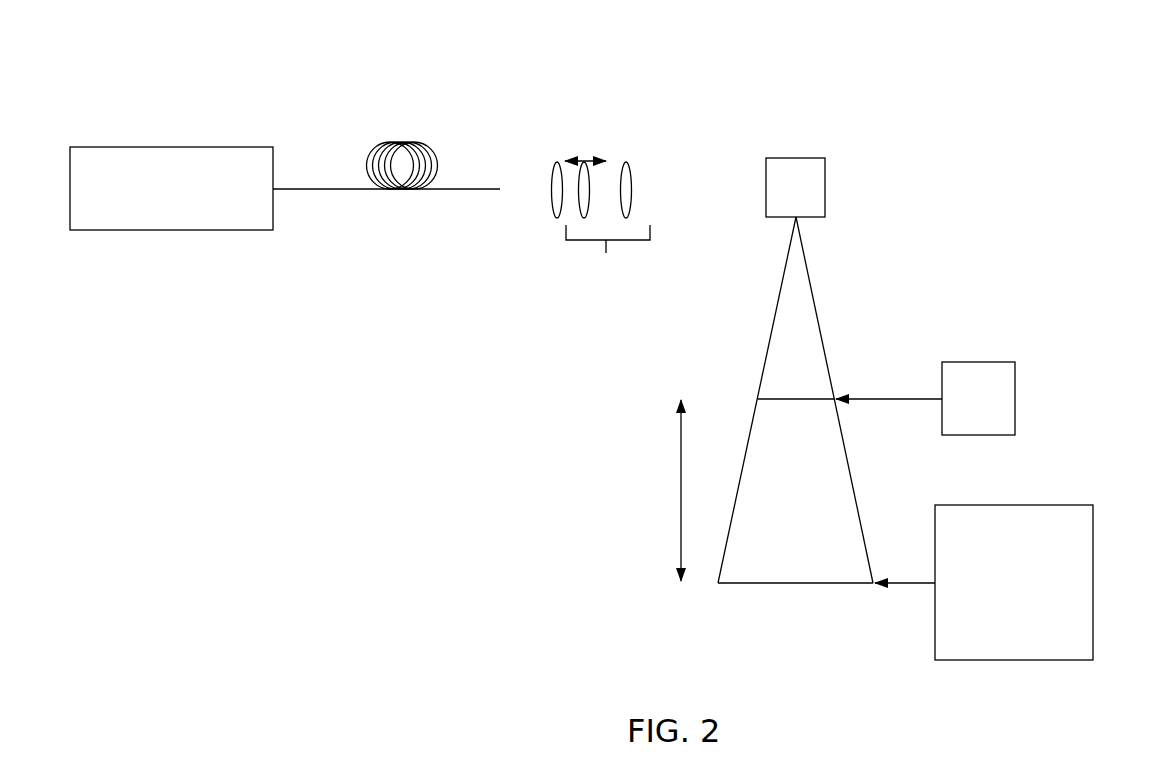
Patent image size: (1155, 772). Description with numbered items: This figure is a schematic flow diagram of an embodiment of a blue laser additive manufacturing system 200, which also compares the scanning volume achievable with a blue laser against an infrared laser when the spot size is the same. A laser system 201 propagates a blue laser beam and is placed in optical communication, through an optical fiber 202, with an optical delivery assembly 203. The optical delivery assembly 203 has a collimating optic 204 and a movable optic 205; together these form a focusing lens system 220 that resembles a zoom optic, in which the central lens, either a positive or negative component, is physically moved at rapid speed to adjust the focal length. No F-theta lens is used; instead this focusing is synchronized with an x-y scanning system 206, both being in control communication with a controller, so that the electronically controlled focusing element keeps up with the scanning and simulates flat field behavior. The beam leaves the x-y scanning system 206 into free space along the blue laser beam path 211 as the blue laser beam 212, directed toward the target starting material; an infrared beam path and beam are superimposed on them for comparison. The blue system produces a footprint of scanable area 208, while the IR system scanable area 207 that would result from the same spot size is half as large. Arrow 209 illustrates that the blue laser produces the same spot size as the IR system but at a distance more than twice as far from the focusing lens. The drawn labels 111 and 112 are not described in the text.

The additive manufacturing system 200 is at (294, 374).
The laser system 201 is at (178, 147).
The optical fiber 202 is at (400, 141).
The optical delivery assembly 203 is at (586, 92).
The collimating optic 204 is at (558, 163).
The movable optic 205 is at (590, 158).
The focusing lens system 220 is at (530, 252).
The x-y scanning system 206 is at (791, 158).
The blue laser beam path 211 is at (778, 294).
The blue laser beam 212 is at (763, 342).
The focal plane 111 is at (849, 463).
The cone edge 112 is at (862, 512).
The arrow 209 is at (681, 476).
The IR system scanable area 207 is at (978, 362).
The scanable area 208 is at (1065, 505).